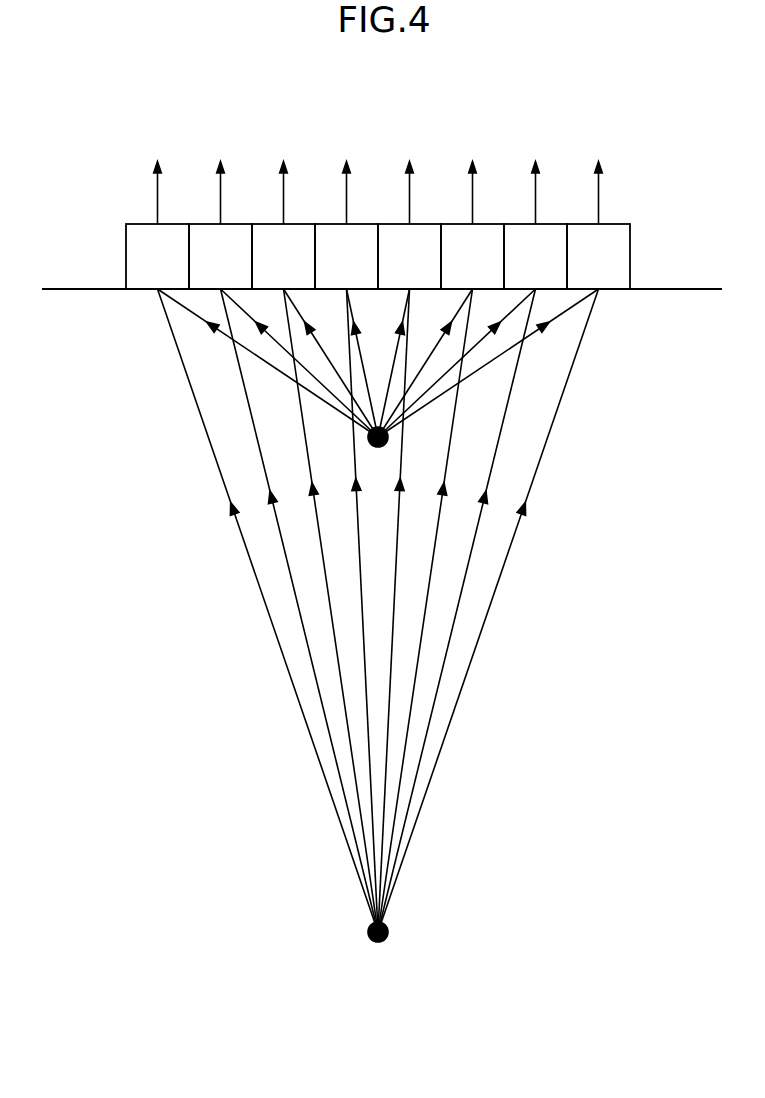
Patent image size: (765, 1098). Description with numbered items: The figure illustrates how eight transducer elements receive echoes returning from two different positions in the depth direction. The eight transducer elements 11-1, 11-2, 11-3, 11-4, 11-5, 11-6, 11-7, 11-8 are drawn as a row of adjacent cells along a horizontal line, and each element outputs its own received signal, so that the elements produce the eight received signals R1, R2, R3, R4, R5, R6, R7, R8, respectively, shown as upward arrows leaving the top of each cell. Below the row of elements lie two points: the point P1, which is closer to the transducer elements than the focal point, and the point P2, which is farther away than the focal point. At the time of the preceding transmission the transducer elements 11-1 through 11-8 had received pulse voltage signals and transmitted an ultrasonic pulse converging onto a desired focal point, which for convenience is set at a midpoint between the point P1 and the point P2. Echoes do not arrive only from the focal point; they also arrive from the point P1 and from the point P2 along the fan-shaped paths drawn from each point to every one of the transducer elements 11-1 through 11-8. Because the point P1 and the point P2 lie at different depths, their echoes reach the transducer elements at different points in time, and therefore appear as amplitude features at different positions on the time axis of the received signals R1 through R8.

The transducer element 11-1 is at (190, 203).
The transducer element 11-2 is at (254, 203).
The transducer element 11-3 is at (316, 203).
The transducer element 11-4 is at (380, 203).
The transducer element 11-5 is at (442, 203).
The transducer element 11-6 is at (506, 203).
The transducer element 11-7 is at (568, 203).
The transducer element 11-8 is at (632, 203).
The received signal R1 is at (157, 177).
The received signal R2 is at (220, 177).
The received signal R3 is at (283, 177).
The received signal R4 is at (346, 177).
The received signal R5 is at (409, 177).
The received signal R6 is at (472, 177).
The received signal R7 is at (535, 177).
The received signal R8 is at (598, 177).
The point P1 is at (388, 440).
The point P2 is at (388, 935).